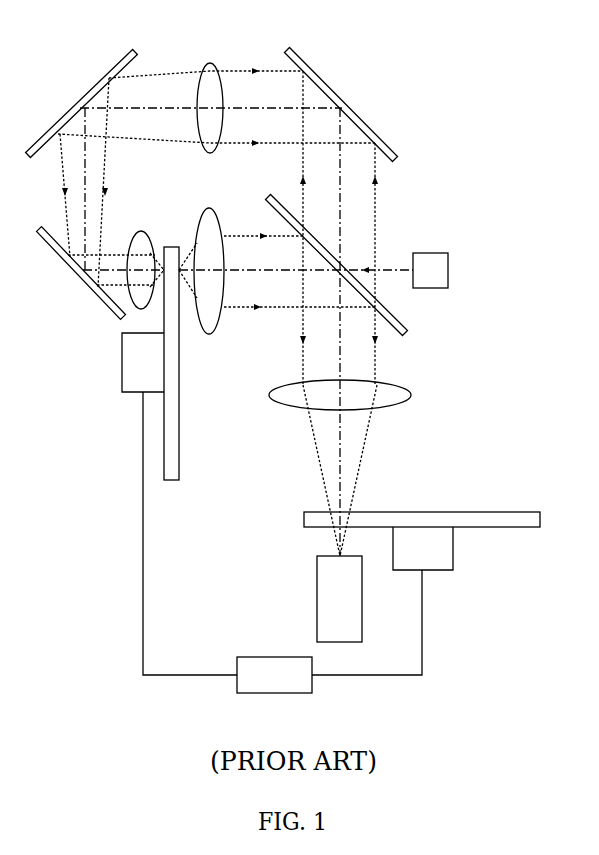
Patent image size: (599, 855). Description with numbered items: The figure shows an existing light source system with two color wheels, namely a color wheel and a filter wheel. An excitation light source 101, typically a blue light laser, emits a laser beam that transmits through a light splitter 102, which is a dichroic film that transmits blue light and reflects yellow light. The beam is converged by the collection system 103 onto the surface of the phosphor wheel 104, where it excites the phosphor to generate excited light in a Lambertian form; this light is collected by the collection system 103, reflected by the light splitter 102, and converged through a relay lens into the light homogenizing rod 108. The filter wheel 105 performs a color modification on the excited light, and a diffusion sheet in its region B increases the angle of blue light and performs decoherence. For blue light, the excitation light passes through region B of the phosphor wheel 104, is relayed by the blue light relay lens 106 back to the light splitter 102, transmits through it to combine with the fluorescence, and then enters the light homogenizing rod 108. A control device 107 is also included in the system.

The excitation light source 101 is at (432, 263).
The light splitter 102 is at (405, 332).
The collection system 103 is at (210, 214).
The phosphor wheel 104 is at (130, 365).
The filter wheel 105 is at (455, 518).
The blue light relay lens 106 is at (210, 62).
The control device 107 is at (262, 670).
The light homogenizing rod 108 is at (335, 608).